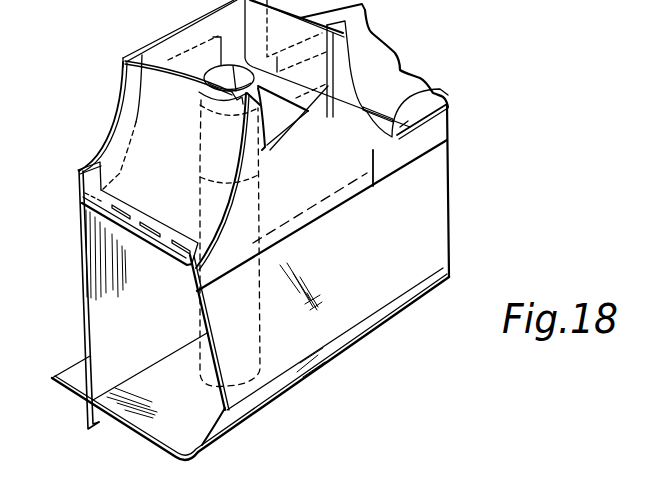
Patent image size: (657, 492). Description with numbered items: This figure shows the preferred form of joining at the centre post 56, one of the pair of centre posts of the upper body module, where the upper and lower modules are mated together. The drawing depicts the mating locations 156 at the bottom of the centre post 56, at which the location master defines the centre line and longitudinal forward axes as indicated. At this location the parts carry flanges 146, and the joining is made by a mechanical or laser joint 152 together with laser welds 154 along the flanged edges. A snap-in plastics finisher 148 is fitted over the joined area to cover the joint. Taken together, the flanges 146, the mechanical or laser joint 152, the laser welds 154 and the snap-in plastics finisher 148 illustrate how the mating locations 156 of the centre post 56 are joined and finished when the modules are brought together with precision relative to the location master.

The centre post 56 is at (162, 112).
The flanges 146 is at (432, 92).
The snap-in plastics finisher 148 is at (340, 162).
The mechanical or laser joint 152 is at (100, 183).
The laser welds 154 is at (152, 231).
The mating locations 156 is at (260, 343).